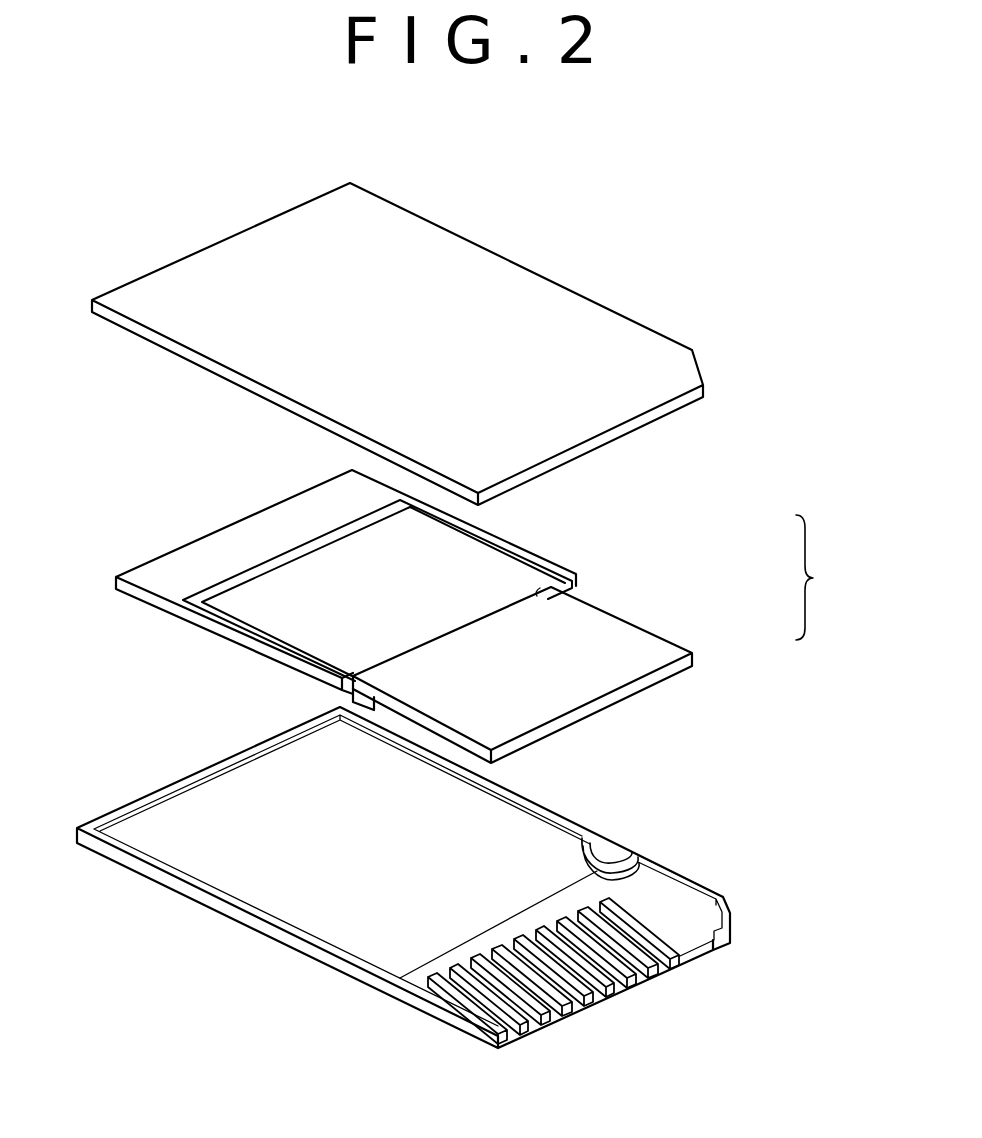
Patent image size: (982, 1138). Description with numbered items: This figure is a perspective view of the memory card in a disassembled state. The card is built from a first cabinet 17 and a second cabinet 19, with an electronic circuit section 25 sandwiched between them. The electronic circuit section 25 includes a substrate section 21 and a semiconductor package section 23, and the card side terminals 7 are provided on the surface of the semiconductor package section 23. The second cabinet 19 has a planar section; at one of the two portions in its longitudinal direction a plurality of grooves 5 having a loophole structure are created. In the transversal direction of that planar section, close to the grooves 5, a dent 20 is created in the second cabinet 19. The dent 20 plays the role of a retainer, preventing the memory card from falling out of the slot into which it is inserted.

The first cabinet 17 is at (579, 326).
The substrate section 21 is at (443, 550).
The semiconductor package section 23 is at (563, 625).
The electronic circuit section 25 is at (829, 577).
The card side terminals 7 is at (645, 707).
The dent 20 is at (612, 852).
The grooves 5 is at (637, 985).
The second cabinet 19 is at (432, 912).